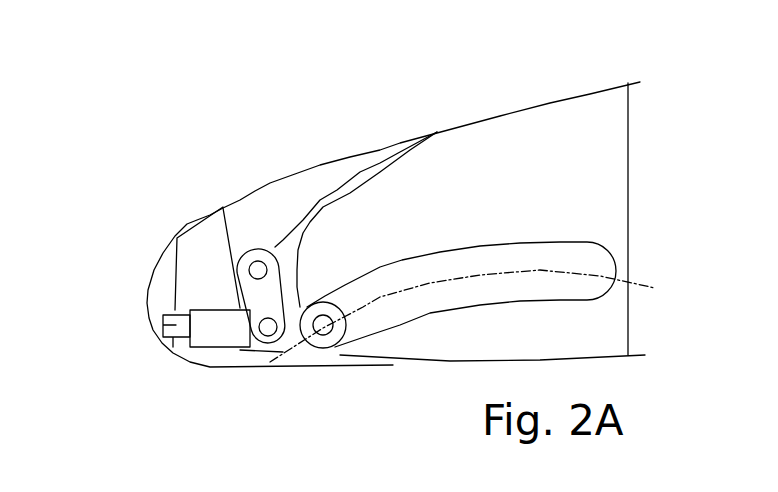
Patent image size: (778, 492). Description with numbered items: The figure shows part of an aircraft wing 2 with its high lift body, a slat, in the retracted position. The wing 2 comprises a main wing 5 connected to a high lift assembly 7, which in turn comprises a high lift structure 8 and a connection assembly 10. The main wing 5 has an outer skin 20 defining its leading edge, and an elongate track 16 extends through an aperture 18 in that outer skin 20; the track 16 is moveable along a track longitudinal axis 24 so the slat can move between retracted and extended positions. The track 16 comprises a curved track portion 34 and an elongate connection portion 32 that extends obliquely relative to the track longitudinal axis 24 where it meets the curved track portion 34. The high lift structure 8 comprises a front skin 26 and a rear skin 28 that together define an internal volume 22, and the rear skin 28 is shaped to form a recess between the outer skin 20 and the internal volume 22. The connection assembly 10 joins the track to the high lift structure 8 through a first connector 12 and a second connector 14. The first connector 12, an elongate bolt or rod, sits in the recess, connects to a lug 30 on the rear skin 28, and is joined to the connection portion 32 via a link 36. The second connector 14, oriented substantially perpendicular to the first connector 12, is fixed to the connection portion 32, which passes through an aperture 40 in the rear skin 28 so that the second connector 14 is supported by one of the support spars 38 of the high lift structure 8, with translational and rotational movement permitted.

The wing 2 is at (232, 102).
The main wing 5 is at (474, 196).
The high lift assembly 7 is at (199, 195).
The high lift structure 8 is at (185, 358).
The connection assembly 10 is at (401, 348).
The first connector 12 is at (260, 262).
The second connector 14 is at (162, 327).
The elongate track 16 is at (518, 257).
The aperture 18 is at (343, 354).
The outer skin 20 is at (323, 207).
The internal volume 22 is at (197, 268).
The track longitudinal axis 24 is at (637, 283).
The front skin 26 is at (147, 302).
The rear skin 28 is at (359, 170).
The lug 30 is at (277, 243).
The elongate connection portion 32 is at (218, 342).
The curved track portion 34 is at (575, 257).
The link 36 is at (248, 350).
The support spars 38 is at (230, 235).
The aperture 40 is at (233, 350).